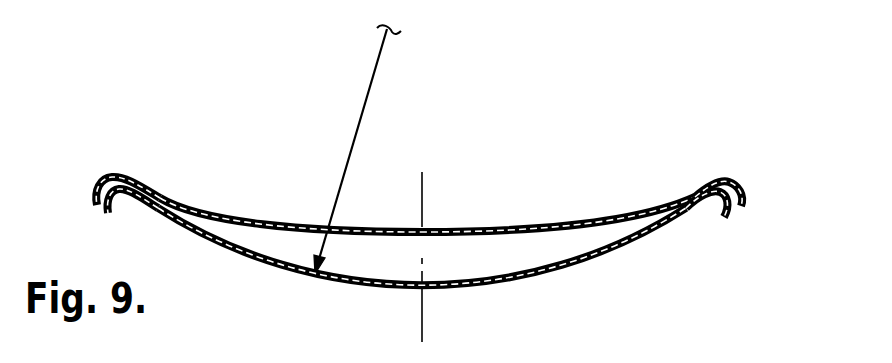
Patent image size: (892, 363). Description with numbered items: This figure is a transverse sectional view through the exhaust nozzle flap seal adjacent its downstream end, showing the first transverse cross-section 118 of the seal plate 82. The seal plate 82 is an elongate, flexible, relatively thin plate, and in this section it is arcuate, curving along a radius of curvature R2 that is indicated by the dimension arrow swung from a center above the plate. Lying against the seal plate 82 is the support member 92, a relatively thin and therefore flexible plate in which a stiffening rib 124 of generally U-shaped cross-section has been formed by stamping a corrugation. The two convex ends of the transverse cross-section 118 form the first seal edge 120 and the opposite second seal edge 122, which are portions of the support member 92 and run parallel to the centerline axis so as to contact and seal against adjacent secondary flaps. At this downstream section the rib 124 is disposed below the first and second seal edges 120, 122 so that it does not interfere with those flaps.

The seal plate 82 is at (537, 284).
The support member 92 is at (541, 214).
The transverse cross-section 118 is at (228, 250).
The first seal edge 120 is at (122, 173).
The second seal edge 122 is at (719, 180).
The stiffening rib 124 is at (474, 228).
The radius of curvature R2 is at (370, 100).